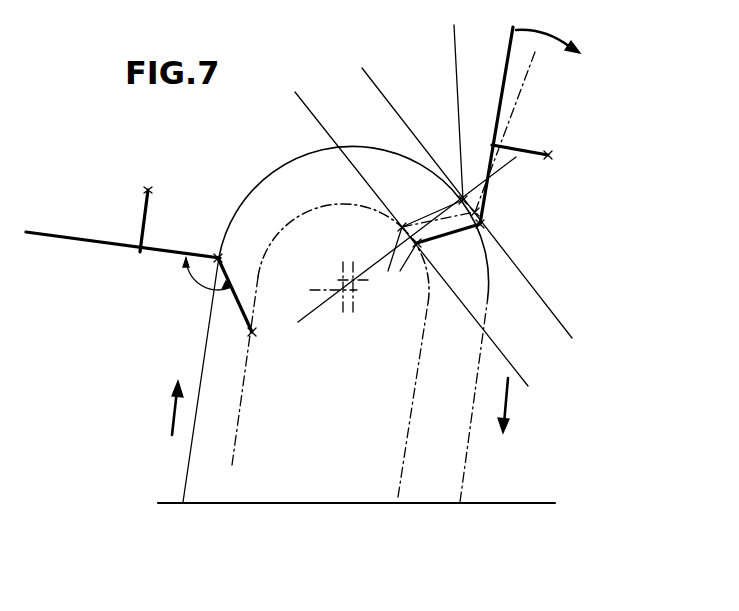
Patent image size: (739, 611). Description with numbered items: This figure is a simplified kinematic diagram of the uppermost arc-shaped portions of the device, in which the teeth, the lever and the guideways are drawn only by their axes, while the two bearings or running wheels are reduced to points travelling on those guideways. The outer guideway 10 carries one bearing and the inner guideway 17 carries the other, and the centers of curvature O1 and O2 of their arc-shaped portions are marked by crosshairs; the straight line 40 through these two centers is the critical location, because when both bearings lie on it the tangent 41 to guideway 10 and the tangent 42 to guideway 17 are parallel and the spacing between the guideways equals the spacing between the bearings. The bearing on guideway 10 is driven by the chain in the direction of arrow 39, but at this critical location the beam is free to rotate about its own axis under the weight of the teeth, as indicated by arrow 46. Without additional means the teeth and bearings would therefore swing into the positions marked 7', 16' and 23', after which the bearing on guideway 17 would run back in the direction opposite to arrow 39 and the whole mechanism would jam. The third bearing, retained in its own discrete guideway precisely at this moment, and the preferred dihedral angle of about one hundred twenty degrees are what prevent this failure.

The teeth in fallen position 7' is at (520, 132).
The guideway 10 is at (470, 472).
The bearing in fallen position 16' is at (374, 239).
The guideway 17 is at (409, 423).
The bearing in fallen position 23' is at (476, 205).
The arrow 39 is at (173, 413).
The reference line through centre 40 is at (378, 262).
The tangent 41 is at (368, 78).
The tangent 42 is at (317, 122).
The arrow 46 is at (543, 37).
The center of curvature O1 is at (355, 285).
The center of curvature O2 is at (340, 292).